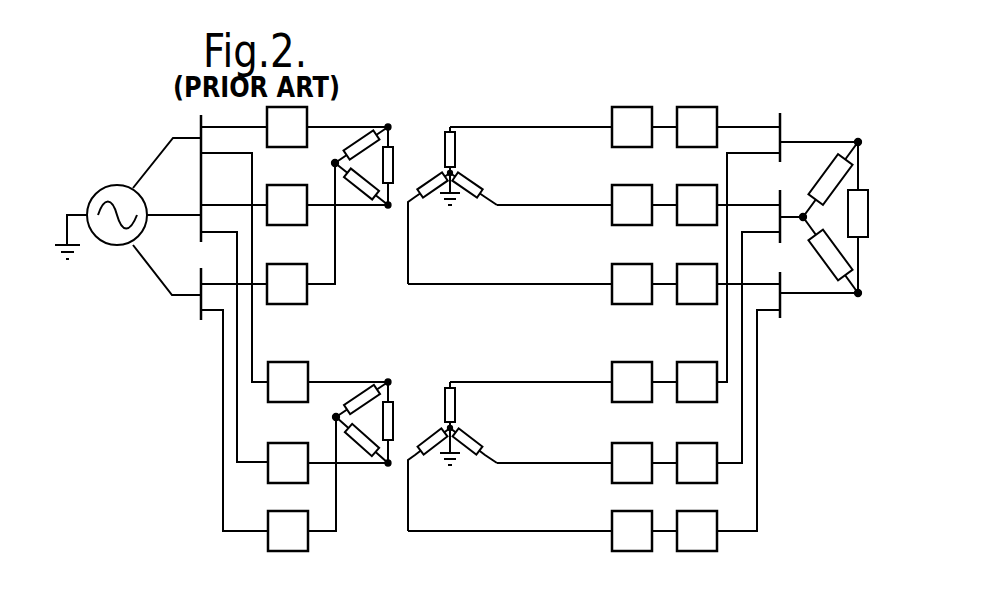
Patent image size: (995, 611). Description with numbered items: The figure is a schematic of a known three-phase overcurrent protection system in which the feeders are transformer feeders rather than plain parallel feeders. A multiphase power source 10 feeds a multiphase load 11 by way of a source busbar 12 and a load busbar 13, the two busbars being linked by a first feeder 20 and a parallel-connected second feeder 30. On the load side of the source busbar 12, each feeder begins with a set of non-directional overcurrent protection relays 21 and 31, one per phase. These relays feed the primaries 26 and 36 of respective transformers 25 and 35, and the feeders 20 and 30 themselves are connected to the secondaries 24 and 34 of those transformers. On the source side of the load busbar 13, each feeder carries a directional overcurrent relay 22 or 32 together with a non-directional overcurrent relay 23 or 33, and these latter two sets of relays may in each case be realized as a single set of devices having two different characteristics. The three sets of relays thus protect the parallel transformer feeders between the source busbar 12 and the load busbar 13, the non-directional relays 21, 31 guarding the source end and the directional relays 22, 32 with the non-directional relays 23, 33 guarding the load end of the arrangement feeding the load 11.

The power source 10 is at (106, 191).
The load 11 is at (852, 300).
The source busbar 12 is at (183, 313).
The load busbar 13 is at (785, 323).
The first feeder 20 is at (528, 123).
The non-directional overcurrent protection relay 21 is at (325, 110).
The directional overcurrent relay 22 is at (632, 106).
The non-directional overcurrent relay 23 is at (698, 106).
The secondary 24 is at (498, 166).
The transformer 25 is at (420, 138).
The primary 26 is at (334, 162).
The second feeder 30 is at (502, 378).
The non-directional overcurrent protection relay 31 is at (313, 373).
The directional overcurrent relay 32 is at (625, 360).
The non-directional overcurrent relay 33 is at (683, 360).
The secondary 34 is at (498, 421).
The transformer 35 is at (422, 385).
The primary 36 is at (335, 409).